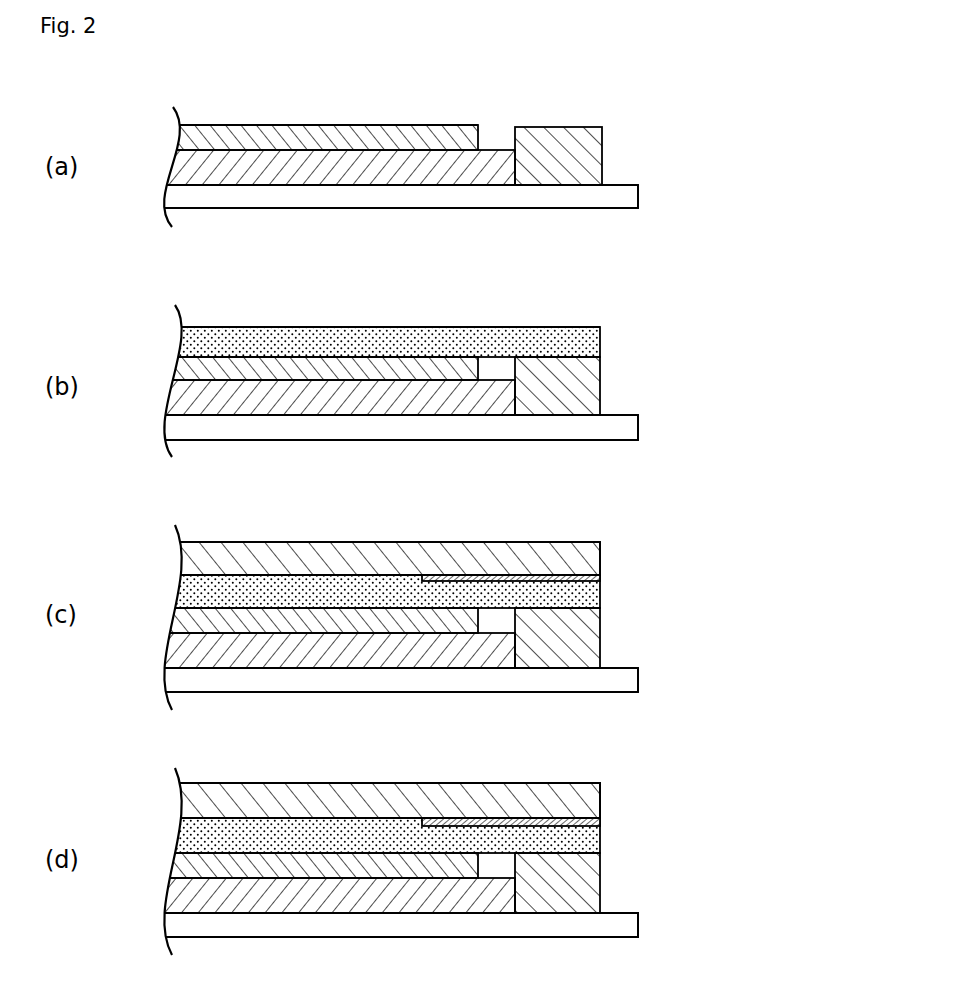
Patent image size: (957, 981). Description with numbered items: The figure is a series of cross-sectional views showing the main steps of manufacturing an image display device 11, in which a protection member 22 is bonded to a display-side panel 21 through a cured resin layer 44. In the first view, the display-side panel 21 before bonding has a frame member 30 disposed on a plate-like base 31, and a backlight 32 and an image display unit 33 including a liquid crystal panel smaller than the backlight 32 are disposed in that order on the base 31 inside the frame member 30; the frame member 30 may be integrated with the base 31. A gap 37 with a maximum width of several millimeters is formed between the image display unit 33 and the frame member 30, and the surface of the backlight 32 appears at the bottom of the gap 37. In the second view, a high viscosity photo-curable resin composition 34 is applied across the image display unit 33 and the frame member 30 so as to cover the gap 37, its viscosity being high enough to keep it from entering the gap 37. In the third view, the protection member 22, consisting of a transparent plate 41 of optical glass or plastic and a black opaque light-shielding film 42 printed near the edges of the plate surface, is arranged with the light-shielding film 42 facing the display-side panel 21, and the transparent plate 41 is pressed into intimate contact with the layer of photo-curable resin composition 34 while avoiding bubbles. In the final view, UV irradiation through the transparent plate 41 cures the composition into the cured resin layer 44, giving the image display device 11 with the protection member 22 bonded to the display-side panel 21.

The image display device 11 is at (130, 771).
The display-side panel 21 is at (620, 133).
The protection member 22 is at (615, 548).
The frame member 30 is at (592, 166).
The base 31 is at (183, 206).
The backlight 32 is at (181, 174).
The image display unit 33 is at (181, 139).
The photo-curable resin composition 34 is at (181, 339).
The gap 37 is at (500, 138).
The transparent plate 41 is at (600, 555).
The light-shielding film 42 is at (600, 580).
The cured resin layer 44 is at (181, 832).